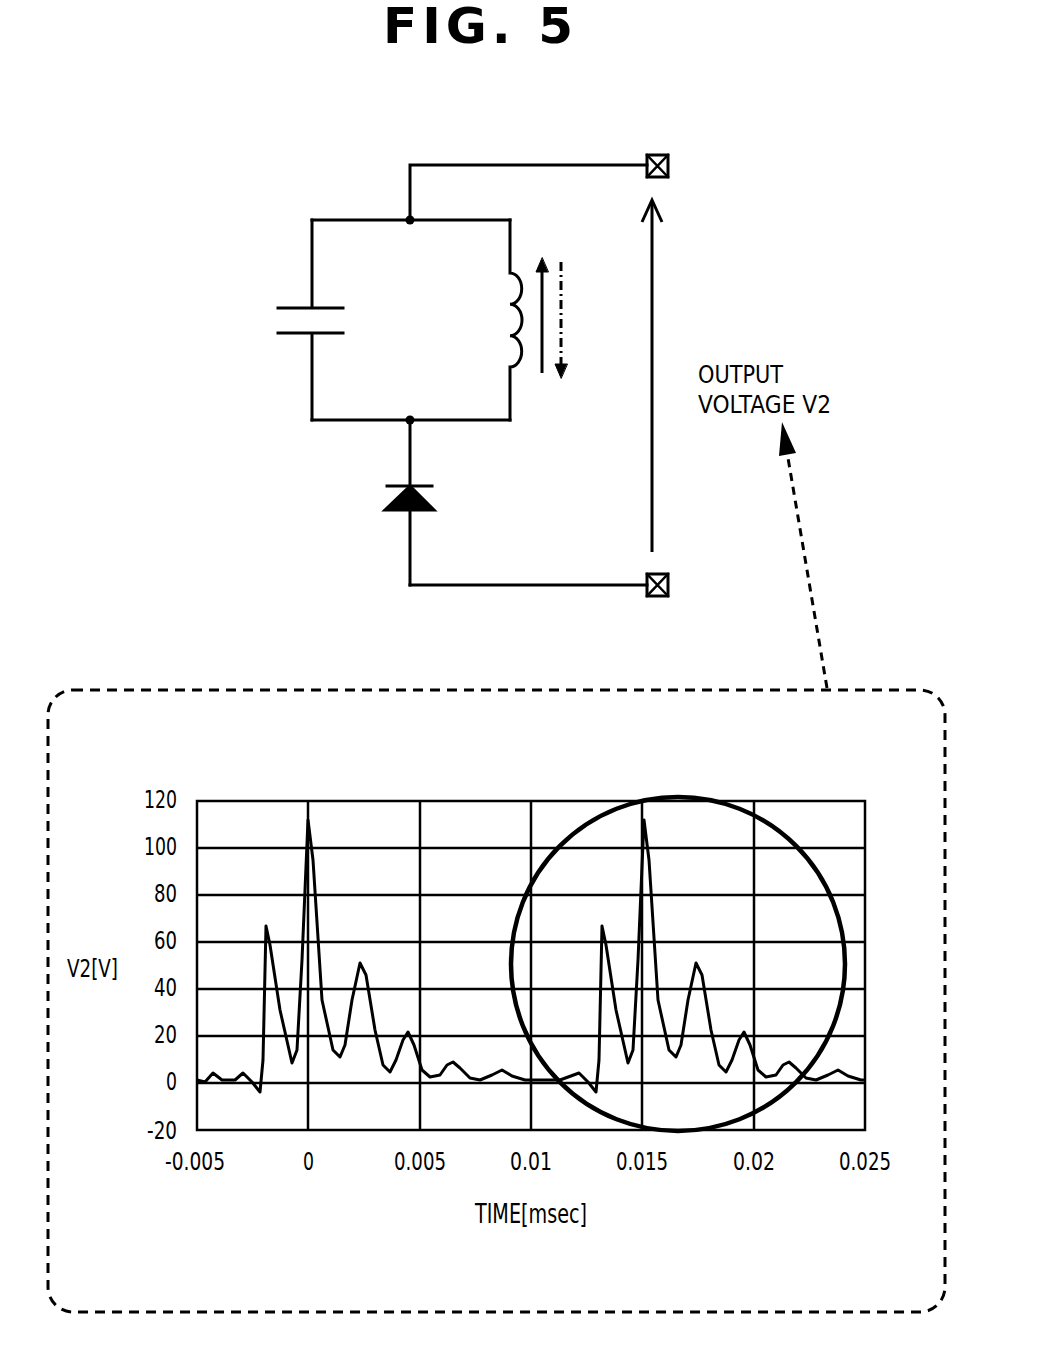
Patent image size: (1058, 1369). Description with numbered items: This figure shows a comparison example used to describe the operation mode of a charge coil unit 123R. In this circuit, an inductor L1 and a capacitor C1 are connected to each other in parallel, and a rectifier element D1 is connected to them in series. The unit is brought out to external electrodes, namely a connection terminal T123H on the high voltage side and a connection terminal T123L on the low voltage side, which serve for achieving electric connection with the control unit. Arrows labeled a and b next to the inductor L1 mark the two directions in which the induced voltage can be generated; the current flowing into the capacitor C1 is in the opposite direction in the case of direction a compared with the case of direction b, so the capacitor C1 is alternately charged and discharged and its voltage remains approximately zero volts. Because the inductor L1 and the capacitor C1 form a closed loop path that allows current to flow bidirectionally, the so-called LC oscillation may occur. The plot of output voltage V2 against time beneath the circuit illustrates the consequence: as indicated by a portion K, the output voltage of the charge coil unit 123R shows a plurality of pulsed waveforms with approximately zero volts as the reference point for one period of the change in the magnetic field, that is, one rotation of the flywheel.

The charge coil unit 123R is at (253, 223).
The capacitor C1 is at (286, 320).
The inductor L1 is at (495, 320).
The rectifier element D1 is at (389, 502).
The connection terminal on the high voltage side T123H is at (582, 187).
The connection terminal on the low voltage side T123L is at (581, 587).
The direction of induced voltage a is at (562, 332).
The direction of induced voltage b is at (544, 302).
The portion K is at (762, 818).